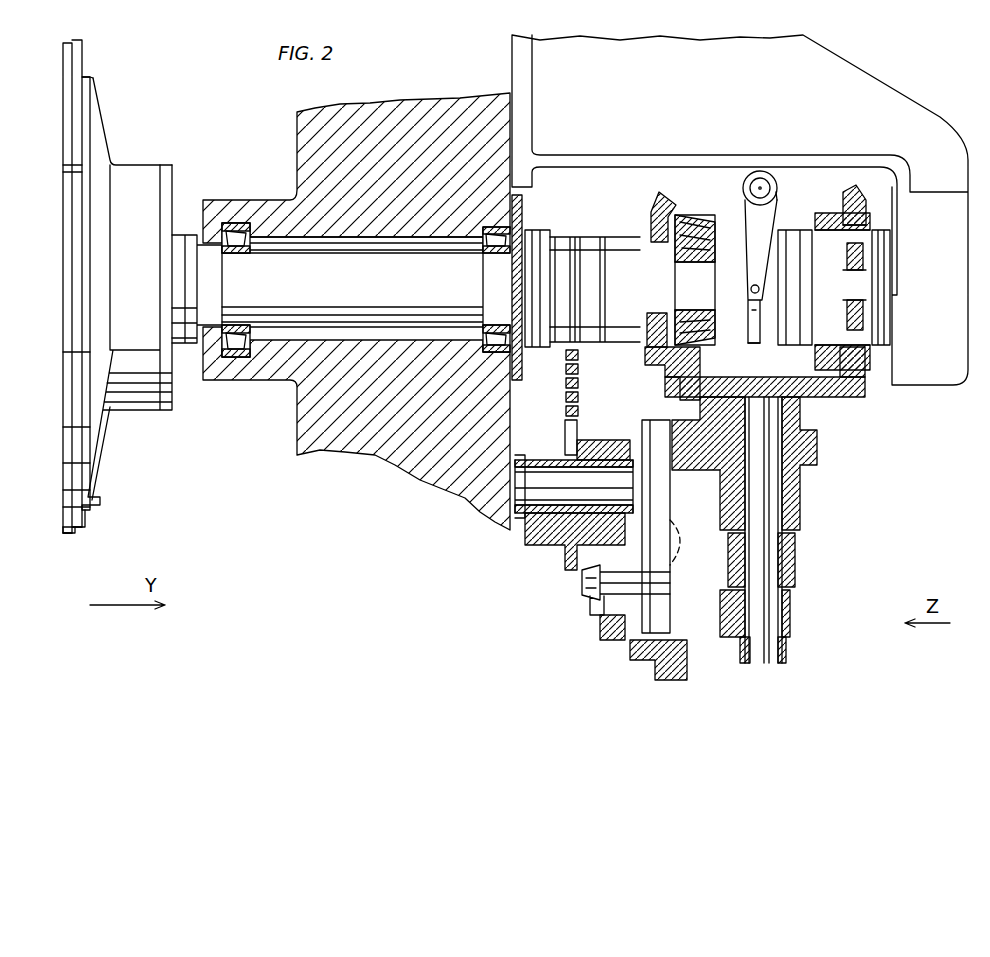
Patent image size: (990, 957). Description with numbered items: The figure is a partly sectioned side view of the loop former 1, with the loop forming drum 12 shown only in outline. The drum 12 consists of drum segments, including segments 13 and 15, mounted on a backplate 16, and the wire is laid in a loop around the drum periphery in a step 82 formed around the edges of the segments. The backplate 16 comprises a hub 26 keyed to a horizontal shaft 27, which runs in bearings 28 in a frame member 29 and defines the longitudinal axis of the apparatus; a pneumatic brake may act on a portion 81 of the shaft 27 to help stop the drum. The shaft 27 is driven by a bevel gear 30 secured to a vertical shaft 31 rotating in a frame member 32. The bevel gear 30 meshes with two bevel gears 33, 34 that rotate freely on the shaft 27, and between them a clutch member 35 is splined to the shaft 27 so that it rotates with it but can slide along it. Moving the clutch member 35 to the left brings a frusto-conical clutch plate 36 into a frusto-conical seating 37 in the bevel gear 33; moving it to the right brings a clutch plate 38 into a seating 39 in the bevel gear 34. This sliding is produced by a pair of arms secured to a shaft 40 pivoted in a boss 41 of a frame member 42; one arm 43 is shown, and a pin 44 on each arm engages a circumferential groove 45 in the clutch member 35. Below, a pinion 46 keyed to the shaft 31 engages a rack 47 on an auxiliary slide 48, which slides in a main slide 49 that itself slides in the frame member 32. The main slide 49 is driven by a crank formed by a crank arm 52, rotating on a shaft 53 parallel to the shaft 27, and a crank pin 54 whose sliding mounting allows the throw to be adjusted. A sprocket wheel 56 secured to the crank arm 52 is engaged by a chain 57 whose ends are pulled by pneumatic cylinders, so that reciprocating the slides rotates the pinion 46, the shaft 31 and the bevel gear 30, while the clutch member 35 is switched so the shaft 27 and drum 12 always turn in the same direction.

The loop former 1 is at (269, 122).
The loop forming drum 12 is at (103, 47).
The drum segment 13 is at (80, 97).
The drum segment 15 is at (66, 352).
The backplate 16 is at (92, 79).
The hub 26 is at (142, 349).
The shaft 27 is at (352, 282).
The bearings 28 is at (244, 254).
The frame member 29 is at (297, 428).
The bevel gear 30 is at (855, 392).
The shaft 31 is at (782, 440).
The frame member 32 is at (802, 497).
The bevel gear 33 is at (651, 210).
The bevel gear 34 is at (868, 212).
The clutch member 35 is at (794, 228).
The frusto-conical clutch plate 36 is at (660, 352).
The frusto-conical seating 37 is at (688, 215).
The frusto-conical clutch plate 38 is at (815, 352).
The frusto-conical seating 39 is at (888, 332).
The shaft 40 is at (760, 178).
The boss 41 is at (778, 176).
The frame member 42 is at (642, 158).
The arm 43 is at (745, 215).
The pin 44 is at (760, 289).
The circumferential groove 45 is at (752, 347).
The pinion 46 is at (797, 562).
The rack 47 is at (770, 595).
The auxiliary slide 48 is at (690, 555).
The main slide 49 is at (645, 662).
The crank arm 52 is at (600, 636).
The shaft 53 is at (515, 486).
The crank pin 54 is at (590, 618).
The sprocket wheel 56 is at (565, 432).
The chain 57 is at (566, 378).
The portion of the shaft 81 is at (541, 229).
The step 82 is at (70, 532).